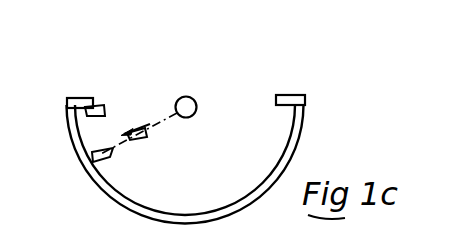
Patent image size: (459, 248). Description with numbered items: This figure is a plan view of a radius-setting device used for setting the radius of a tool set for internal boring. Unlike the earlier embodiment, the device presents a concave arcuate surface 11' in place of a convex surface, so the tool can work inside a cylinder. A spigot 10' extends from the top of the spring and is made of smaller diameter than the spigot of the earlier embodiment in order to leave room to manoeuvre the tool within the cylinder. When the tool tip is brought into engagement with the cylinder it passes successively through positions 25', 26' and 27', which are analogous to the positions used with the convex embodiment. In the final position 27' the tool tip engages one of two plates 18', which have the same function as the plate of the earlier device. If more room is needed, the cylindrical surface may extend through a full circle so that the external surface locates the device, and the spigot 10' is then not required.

The spigot 10' is at (177, 100).
The concave surface 11' is at (185, 164).
The plates 18' is at (195, 71).
The position 25' is at (149, 160).
The position 26' is at (81, 187).
The position 27' is at (129, 84).